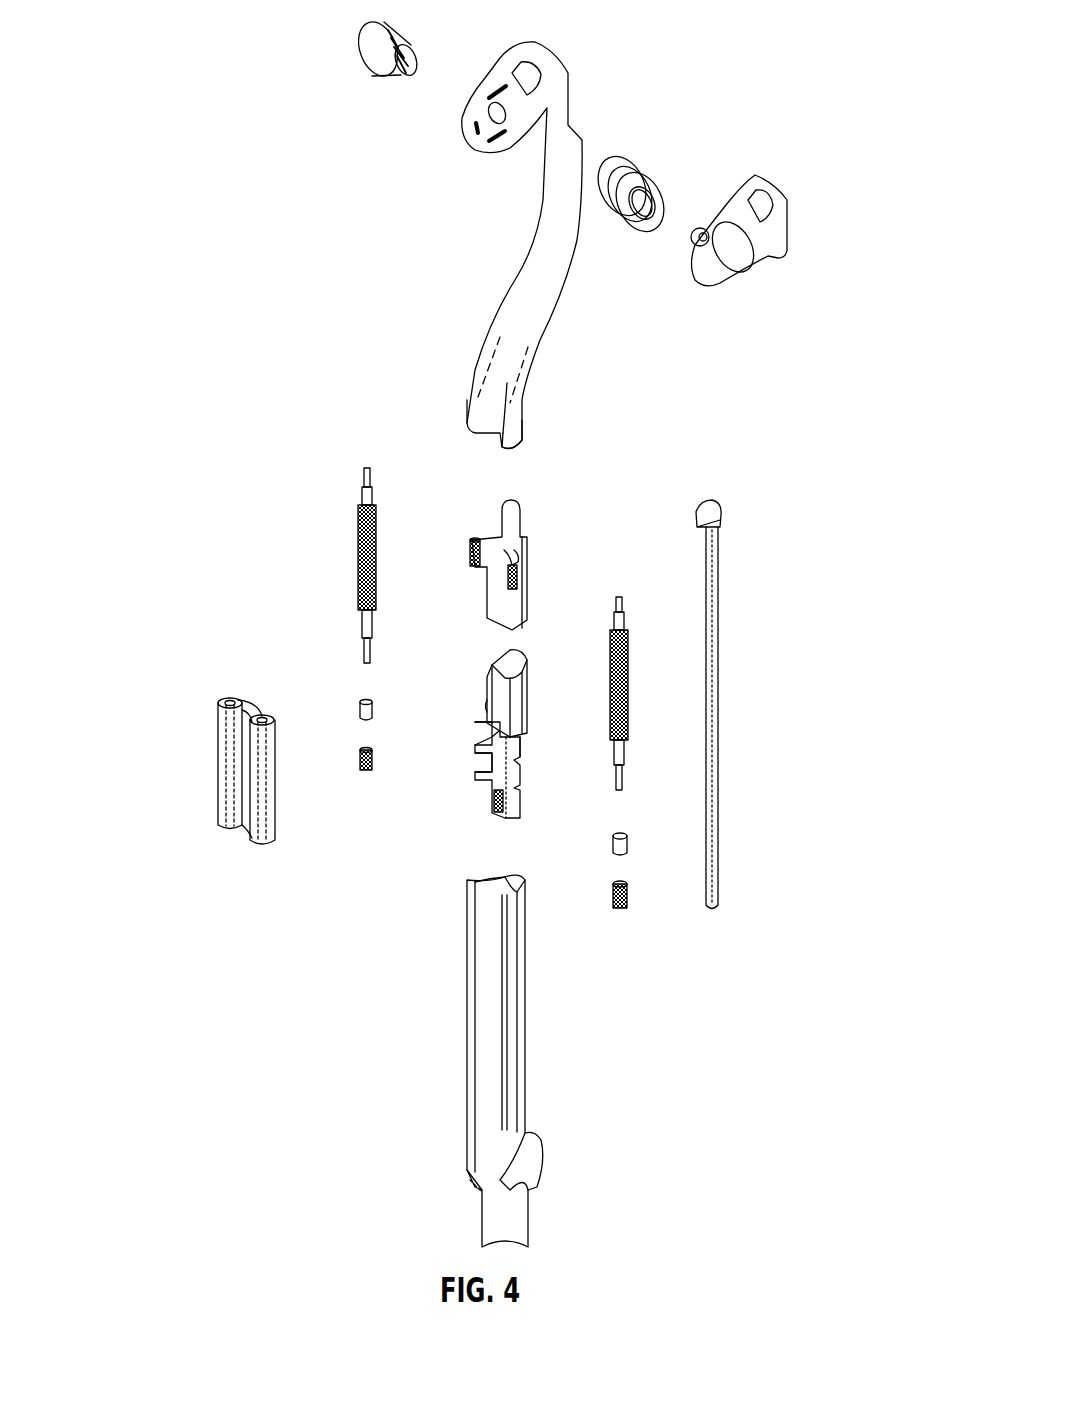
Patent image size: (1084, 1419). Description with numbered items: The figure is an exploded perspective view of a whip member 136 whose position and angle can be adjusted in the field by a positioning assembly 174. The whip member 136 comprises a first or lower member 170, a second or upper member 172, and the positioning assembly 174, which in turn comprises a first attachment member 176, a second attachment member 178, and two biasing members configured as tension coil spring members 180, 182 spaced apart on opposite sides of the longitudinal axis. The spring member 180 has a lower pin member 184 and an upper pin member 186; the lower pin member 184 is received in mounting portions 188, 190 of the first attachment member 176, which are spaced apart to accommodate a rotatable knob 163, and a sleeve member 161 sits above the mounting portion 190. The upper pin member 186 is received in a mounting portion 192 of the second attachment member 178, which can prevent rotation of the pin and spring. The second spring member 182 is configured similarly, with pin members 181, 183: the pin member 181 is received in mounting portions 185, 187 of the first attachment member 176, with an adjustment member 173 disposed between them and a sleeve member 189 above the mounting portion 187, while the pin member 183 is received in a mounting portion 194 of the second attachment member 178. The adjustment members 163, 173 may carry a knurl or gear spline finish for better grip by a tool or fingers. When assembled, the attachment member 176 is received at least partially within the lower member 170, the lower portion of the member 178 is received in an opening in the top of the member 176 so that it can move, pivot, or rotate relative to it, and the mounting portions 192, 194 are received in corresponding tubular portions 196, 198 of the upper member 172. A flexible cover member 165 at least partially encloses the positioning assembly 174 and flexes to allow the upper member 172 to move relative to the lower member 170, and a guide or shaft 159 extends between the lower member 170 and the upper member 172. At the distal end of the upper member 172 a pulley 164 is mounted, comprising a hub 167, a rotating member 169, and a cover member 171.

The whip member 136 is at (298, 331).
The guide or shaft 159 is at (716, 683).
The sleeve member 161 is at (360, 712).
The rotatable knob 163 is at (360, 762).
The pulley 164 is at (674, 46).
The cover member 165 is at (218, 752).
The hub 167 is at (404, 38).
The rotating member 169 is at (620, 160).
The lower member 170 is at (510, 1072).
The cover member 171 is at (790, 203).
The upper member 172 is at (489, 245).
The adjustment member 173 is at (628, 897).
The positioning assembly 174 is at (280, 524).
The first attachment member 176 is at (490, 678).
The second attachment member 178 is at (499, 565).
The spring member 180 is at (329, 552).
The pin member 181 is at (622, 780).
The second spring member 182 is at (617, 697).
The pin member 183 is at (622, 612).
The lower pin member 184 is at (363, 648).
The mounting portion 185 is at (495, 770).
The upper pin member 186 is at (365, 474).
The mounting portion 187 is at (521, 750).
The mounting portion 188 is at (475, 770).
The sleeve member 189 is at (627, 848).
The mounting portion 190 is at (474, 735).
The mounting portion 192 is at (470, 542).
The mounting portion 194 is at (520, 572).
The tubular portion 196 is at (463, 416).
The tubular portion 198 is at (515, 426).